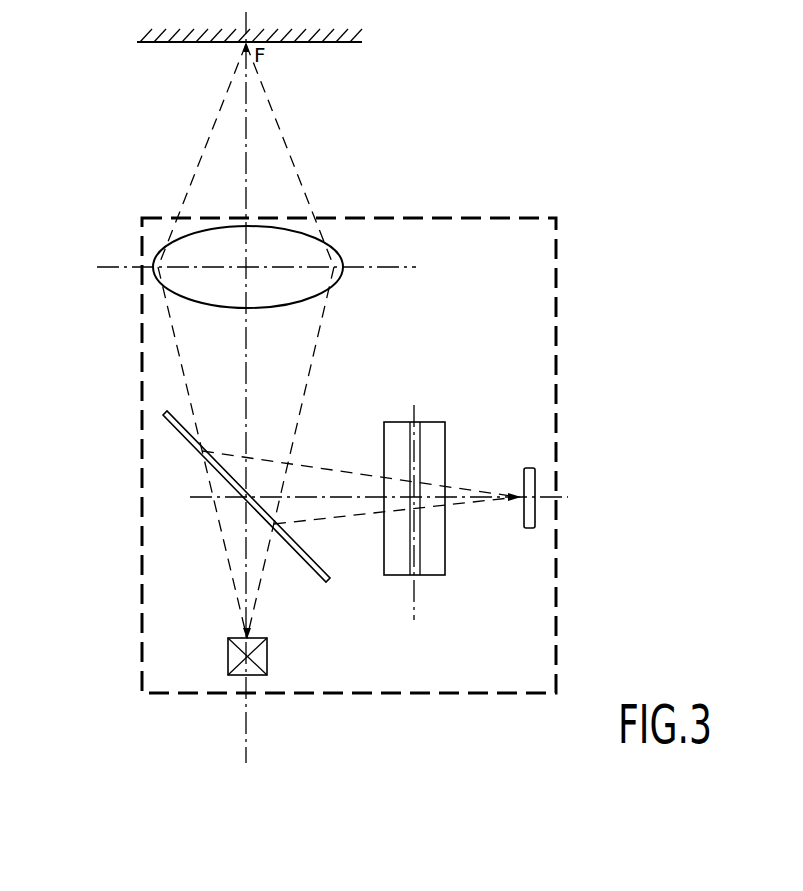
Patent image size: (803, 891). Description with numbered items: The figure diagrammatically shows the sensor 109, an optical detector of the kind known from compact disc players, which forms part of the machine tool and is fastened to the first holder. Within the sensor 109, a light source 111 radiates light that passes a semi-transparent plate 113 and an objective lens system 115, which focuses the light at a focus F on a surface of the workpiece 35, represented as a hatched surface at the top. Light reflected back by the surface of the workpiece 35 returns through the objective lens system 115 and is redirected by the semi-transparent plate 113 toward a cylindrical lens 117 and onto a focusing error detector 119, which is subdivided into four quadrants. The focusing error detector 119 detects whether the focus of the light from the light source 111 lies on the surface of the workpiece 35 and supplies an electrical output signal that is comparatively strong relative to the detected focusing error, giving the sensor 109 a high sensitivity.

The workpiece 35 is at (327, 42).
The sensor 109 is at (124, 688).
The light source 111 is at (267, 650).
The semi-transparent plate 113 is at (312, 568).
The objective lens system 115 is at (341, 273).
The cylindrical lens 117 is at (420, 575).
The focusing error detector 119 is at (527, 528).